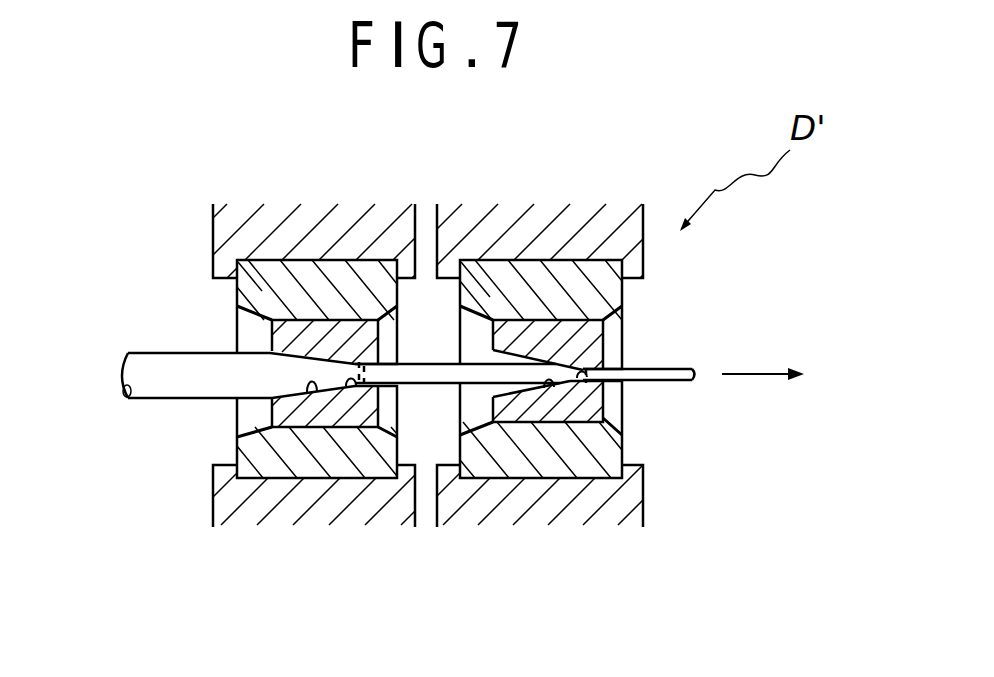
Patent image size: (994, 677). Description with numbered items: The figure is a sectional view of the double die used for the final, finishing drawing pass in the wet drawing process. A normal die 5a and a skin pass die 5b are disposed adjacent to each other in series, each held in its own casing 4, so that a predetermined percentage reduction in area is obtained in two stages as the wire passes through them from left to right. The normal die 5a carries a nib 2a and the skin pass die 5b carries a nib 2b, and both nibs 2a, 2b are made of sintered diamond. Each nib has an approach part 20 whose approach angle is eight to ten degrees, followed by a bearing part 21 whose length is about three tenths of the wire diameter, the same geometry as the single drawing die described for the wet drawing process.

The nib 2a is at (318, 327).
The nib 2b is at (620, 310).
The casing 4 is at (238, 230).
The normal die 5a is at (255, 448).
The skin pass die 5b is at (510, 465).
The approach part 20 is at (312, 392).
The bearing part 21 is at (360, 388).